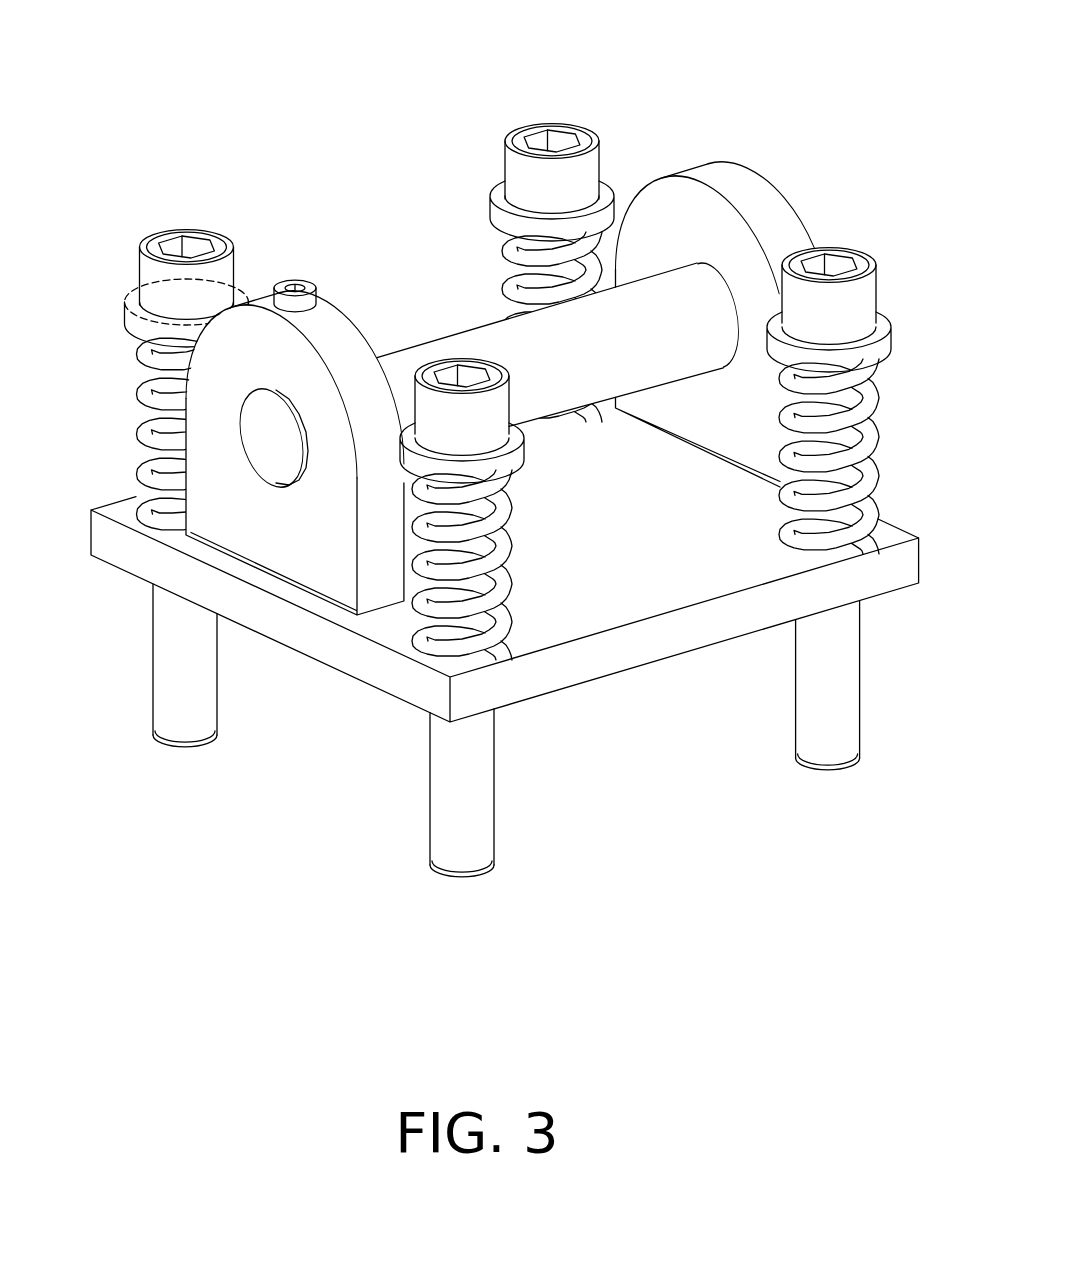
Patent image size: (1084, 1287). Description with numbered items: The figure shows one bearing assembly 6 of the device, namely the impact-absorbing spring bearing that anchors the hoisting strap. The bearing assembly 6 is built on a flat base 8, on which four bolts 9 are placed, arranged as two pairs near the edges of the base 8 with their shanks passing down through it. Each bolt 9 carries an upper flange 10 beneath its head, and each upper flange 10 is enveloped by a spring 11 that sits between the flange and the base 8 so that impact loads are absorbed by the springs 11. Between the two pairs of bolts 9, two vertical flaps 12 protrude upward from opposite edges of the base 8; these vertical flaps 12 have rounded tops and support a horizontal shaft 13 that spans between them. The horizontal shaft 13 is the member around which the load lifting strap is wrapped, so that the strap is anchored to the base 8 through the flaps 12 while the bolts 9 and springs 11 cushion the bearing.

The bearing assembly 6 is at (232, 92).
The base 8 is at (183, 577).
The bolt 9 is at (155, 237).
The upper flange 10 is at (140, 330).
The spring 11 is at (148, 365).
The vertical flap 12 is at (210, 432).
The horizontal shaft 13 is at (588, 355).